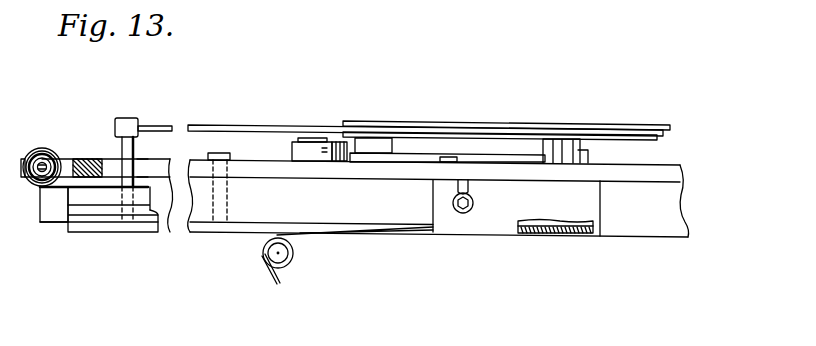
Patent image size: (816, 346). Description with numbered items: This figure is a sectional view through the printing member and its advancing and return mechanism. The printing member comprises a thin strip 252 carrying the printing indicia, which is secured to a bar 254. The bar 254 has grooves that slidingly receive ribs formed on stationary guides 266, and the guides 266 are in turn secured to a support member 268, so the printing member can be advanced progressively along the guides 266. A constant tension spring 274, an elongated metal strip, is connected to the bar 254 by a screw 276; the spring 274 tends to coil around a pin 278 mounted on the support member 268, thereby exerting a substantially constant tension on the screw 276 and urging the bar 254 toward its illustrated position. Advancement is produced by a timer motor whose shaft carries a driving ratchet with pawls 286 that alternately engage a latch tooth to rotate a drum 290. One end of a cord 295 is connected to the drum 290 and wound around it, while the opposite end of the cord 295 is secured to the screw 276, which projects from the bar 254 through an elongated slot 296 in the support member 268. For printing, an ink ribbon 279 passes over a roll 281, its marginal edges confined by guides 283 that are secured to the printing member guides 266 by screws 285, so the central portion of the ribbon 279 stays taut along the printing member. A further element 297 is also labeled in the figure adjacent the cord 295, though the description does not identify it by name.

The thin strip 252 is at (93, 232).
The bar 254 is at (158, 216).
The stationary guides 266 is at (299, 178).
The support member 268 is at (670, 164).
The constant tension spring 274 is at (32, 180).
The screw 276 is at (135, 118).
The pin 278 is at (45, 160).
The ink ribbon 279 is at (276, 288).
The roll 281 is at (293, 266).
The guides 283 is at (433, 205).
The screws 285 is at (474, 201).
The pawls 286 is at (584, 163).
The drum 290 is at (380, 123).
The cord 295 is at (240, 127).
The elongated slot 296 is at (108, 162).
The stop 297 is at (292, 151).